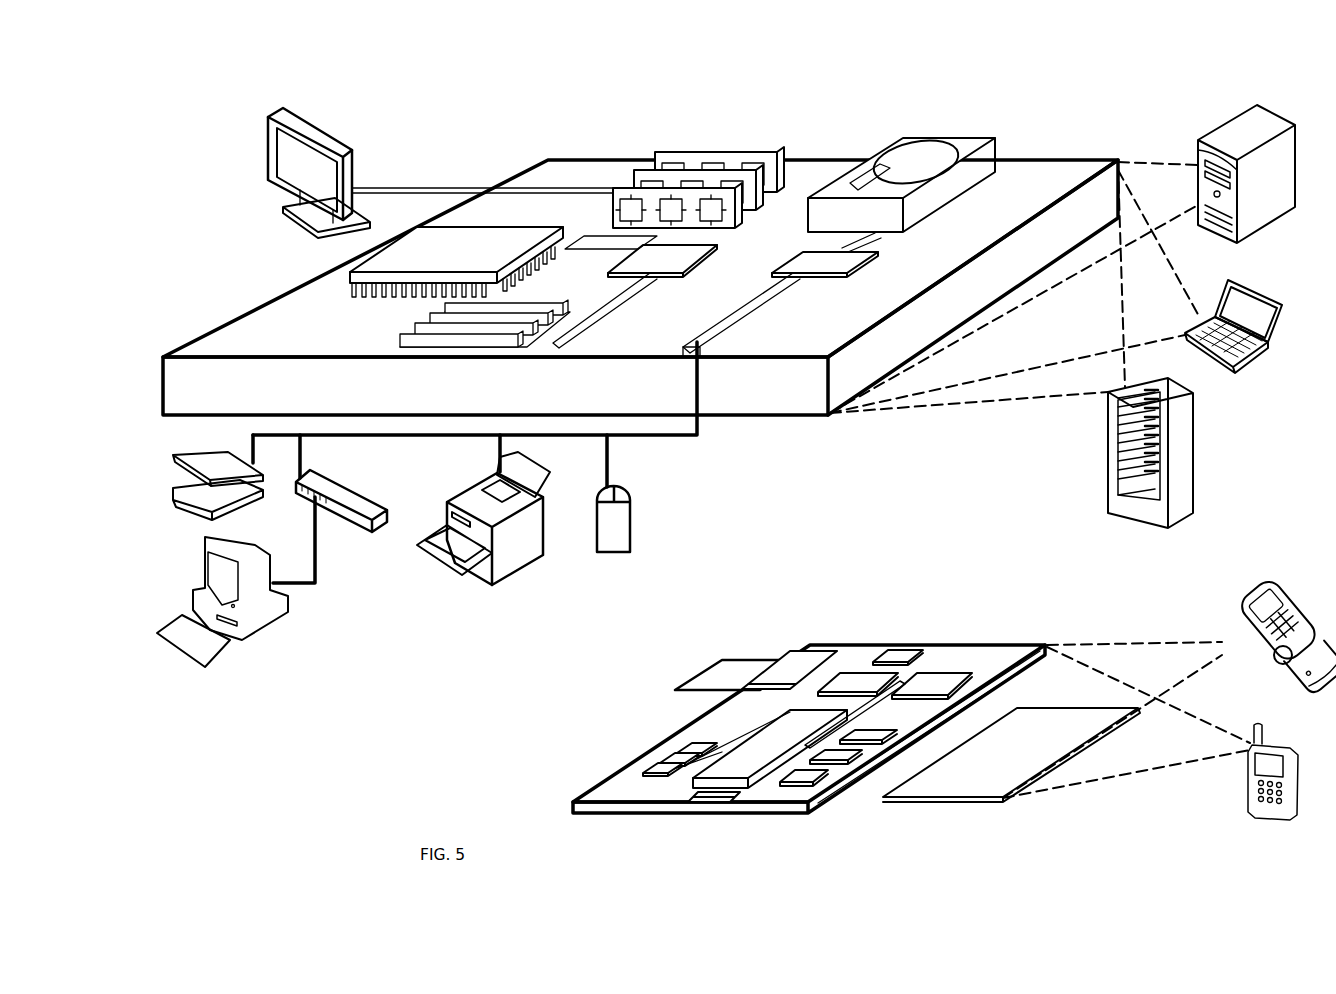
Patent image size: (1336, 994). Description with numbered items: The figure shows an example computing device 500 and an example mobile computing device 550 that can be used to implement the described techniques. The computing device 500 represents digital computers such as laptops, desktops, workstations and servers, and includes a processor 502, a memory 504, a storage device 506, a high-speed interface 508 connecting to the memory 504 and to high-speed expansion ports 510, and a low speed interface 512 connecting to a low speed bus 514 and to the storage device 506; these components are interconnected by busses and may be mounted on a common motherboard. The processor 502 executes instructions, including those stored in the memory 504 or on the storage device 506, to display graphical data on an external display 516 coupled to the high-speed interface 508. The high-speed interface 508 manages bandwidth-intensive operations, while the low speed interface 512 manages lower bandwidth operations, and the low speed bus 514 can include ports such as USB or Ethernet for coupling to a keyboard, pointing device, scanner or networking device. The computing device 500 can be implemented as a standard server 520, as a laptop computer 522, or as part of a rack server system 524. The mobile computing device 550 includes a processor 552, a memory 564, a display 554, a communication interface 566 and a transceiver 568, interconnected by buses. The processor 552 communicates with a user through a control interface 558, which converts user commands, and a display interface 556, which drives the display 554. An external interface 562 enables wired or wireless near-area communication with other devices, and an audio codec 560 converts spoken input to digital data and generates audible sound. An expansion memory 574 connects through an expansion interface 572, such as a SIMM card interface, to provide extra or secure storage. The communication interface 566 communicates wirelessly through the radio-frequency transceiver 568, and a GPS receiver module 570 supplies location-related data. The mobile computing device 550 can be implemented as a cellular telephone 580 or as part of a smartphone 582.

The computing device 500 is at (471, 129).
The processor 502 is at (347, 281).
The memory 504 is at (664, 152).
The storage device 506 is at (895, 140).
The high-speed interface 508 is at (638, 259).
The high-speed expansion ports 510 is at (417, 322).
The low speed interface 512 is at (822, 262).
The low speed bus 514 is at (699, 355).
The display 516 is at (269, 121).
The standard server 520 is at (1197, 145).
The laptop computer 522 is at (1227, 282).
The rack server system 524 is at (1108, 480).
The mobile computer device 550 is at (787, 621).
The processor 552 is at (746, 789).
The display 554 is at (1005, 800).
The display interface 556 is at (809, 790).
The control interface 558 is at (845, 763).
The audio codec 560 is at (868, 742).
The external interface 562 is at (700, 803).
The memory 564 is at (658, 765).
The communication interface 566 is at (858, 682).
The transceiver 568 is at (933, 682).
The GPS receiver module 570 is at (905, 649).
The expansion interface 572 is at (784, 660).
The expansion memory 574 is at (718, 660).
The cellular telephone 580 is at (1275, 591).
The smartphone 582 is at (1256, 722).